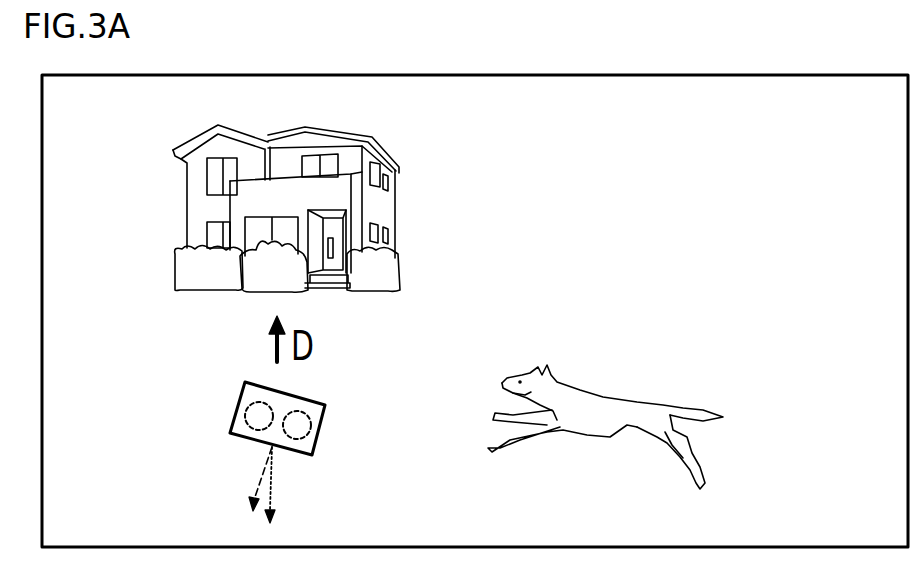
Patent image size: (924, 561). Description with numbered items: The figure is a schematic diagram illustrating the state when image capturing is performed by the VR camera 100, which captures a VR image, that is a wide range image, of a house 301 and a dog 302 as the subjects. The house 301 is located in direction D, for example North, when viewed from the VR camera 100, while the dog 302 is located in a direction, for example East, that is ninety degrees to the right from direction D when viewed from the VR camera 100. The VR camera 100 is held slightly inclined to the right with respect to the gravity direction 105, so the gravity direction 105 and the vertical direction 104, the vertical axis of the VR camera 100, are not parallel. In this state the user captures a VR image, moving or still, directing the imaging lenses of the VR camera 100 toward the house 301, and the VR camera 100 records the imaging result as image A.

The VR camera 100 is at (327, 403).
The vertical direction 104 is at (263, 473).
The gravity direction 105 is at (273, 492).
The house 301 is at (386, 148).
The dog 302 is at (690, 408).